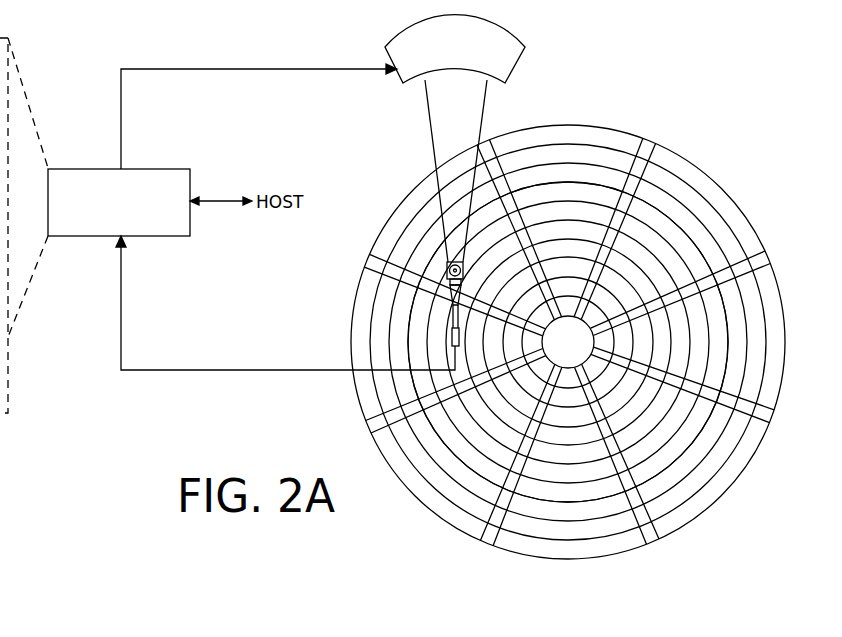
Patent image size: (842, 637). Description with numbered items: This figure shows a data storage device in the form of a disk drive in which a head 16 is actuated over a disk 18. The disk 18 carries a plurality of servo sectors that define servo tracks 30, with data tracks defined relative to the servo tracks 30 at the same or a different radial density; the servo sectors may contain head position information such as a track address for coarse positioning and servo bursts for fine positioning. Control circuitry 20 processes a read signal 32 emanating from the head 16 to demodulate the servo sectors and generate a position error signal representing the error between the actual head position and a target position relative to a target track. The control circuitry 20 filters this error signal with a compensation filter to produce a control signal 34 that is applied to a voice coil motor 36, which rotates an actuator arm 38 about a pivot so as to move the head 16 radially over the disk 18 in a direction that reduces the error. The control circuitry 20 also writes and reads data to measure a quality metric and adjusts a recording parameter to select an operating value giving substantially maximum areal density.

The head 16 is at (440, 334).
The disk 18 is at (724, 166).
The control circuitry 20 is at (155, 169).
The servo tracks 30 is at (571, 152).
The read signal 32 is at (246, 370).
The control signal 34 is at (121, 102).
The voice coil motor 36 is at (401, 77).
The actuator arm 38 is at (436, 153).